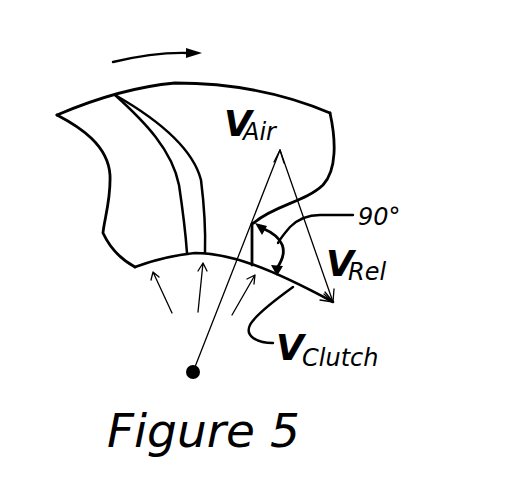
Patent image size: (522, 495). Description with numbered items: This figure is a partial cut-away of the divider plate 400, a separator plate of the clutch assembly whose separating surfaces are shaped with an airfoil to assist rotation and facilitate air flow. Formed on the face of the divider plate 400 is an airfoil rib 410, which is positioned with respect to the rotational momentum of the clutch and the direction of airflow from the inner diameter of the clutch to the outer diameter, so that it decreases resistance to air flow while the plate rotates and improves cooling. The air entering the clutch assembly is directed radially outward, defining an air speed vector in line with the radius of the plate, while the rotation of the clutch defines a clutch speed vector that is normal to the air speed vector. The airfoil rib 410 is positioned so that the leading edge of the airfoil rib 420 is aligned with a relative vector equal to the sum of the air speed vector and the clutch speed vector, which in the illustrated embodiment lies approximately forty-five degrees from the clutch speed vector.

The divider plate 400 is at (325, 128).
The airfoil rib 410 is at (158, 129).
The leading edge of the airfoil rib 420 is at (168, 234).